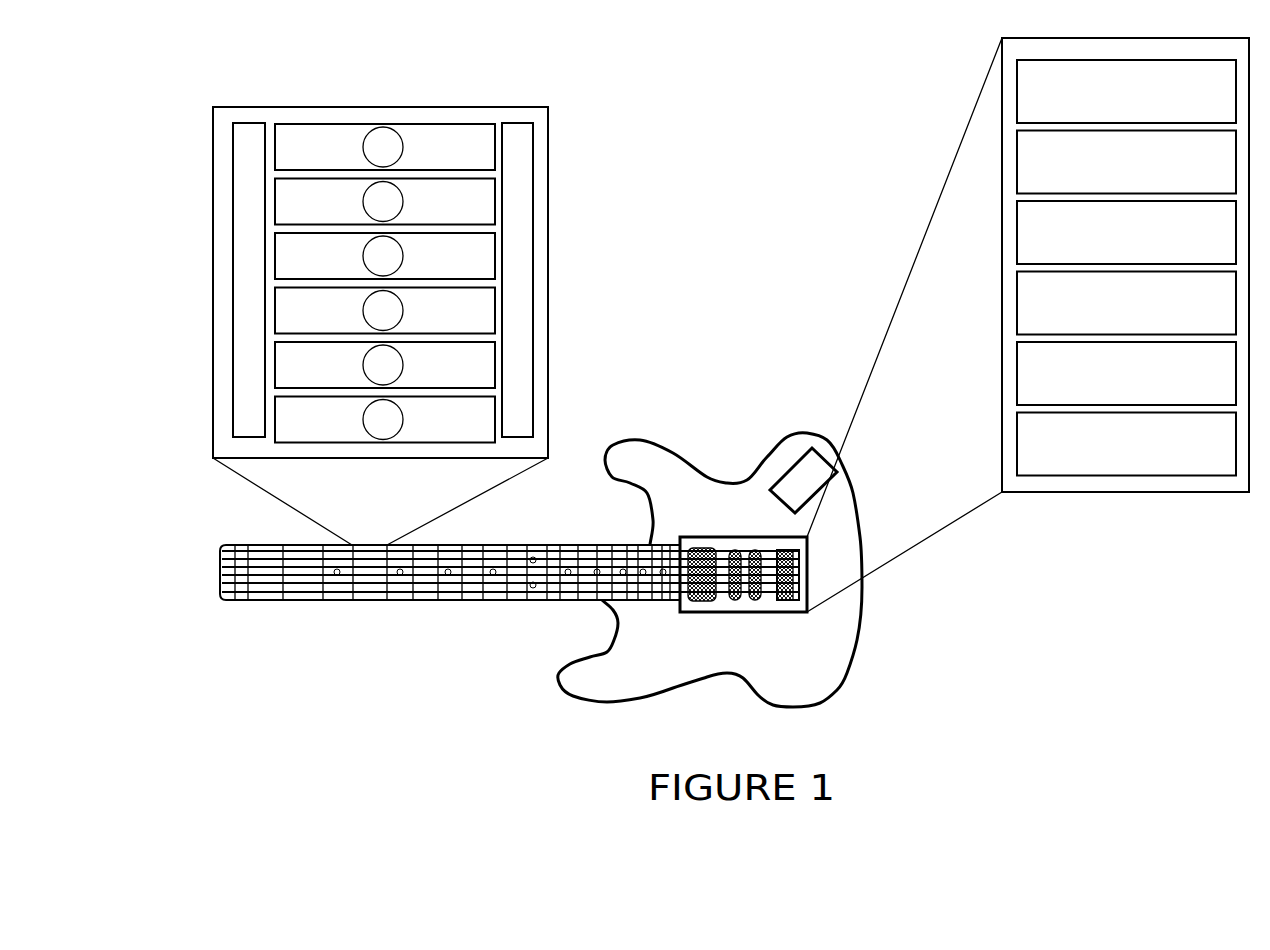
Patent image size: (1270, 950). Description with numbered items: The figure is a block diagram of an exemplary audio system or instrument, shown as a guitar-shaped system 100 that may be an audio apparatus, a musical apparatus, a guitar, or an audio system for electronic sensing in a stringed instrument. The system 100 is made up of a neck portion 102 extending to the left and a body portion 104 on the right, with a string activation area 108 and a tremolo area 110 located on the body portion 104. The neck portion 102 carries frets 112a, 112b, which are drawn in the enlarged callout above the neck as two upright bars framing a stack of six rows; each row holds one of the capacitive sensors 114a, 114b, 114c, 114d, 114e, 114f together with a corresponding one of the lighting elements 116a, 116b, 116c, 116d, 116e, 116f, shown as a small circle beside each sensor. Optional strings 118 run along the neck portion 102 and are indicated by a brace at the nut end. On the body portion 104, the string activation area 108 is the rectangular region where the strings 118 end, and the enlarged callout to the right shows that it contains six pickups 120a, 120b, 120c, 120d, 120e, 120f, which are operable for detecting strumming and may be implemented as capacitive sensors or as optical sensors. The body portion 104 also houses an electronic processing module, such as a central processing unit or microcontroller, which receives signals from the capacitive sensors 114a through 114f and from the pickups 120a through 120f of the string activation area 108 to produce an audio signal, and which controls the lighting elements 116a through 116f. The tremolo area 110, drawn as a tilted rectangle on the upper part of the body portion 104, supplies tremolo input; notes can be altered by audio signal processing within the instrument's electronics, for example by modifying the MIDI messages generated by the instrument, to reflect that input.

The system 100 is at (178, 36).
The neck portion 102 is at (484, 546).
The body portion 104 is at (843, 689).
The string activation area 108 is at (781, 617).
The tremolo area 110 is at (814, 470).
The fret 112a is at (252, 118).
The fret 112b is at (517, 118).
The capacitive sensor 114a is at (385, 147).
The capacitive sensor 114b is at (385, 202).
The capacitive sensor 114c is at (385, 256).
The capacitive sensor 114d is at (385, 311).
The capacitive sensor 114e is at (385, 365).
The capacitive sensor 114f is at (385, 420).
The lighting element 116a is at (407, 145).
The lighting element 116b is at (407, 200).
The lighting element 116c is at (407, 254).
The lighting element 116d is at (407, 308).
The lighting element 116e is at (407, 363).
The lighting element 116f is at (407, 418).
The strings 118 is at (216, 547).
The pickup 120a is at (1126, 91).
The pickup 120b is at (1126, 162).
The pickup 120c is at (1126, 232).
The pickup 120d is at (1126, 303).
The pickup 120e is at (1126, 373).
The pickup 120f is at (1126, 444).